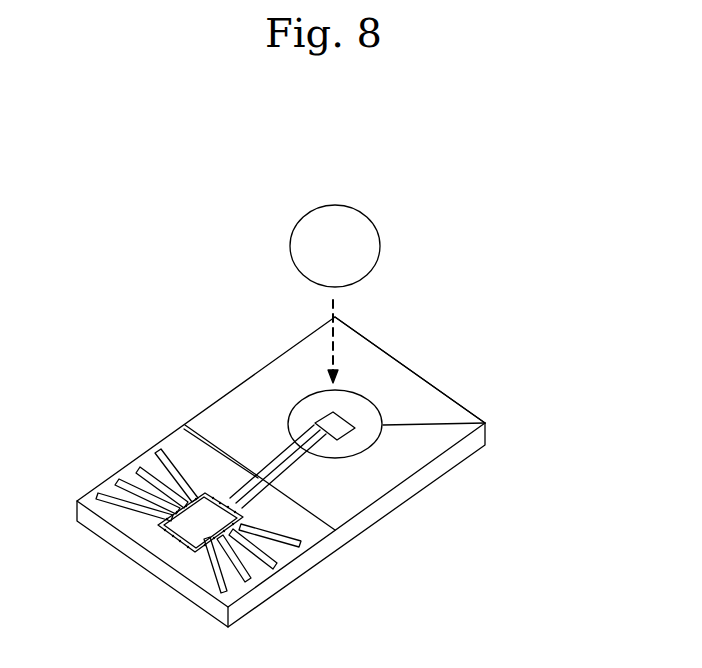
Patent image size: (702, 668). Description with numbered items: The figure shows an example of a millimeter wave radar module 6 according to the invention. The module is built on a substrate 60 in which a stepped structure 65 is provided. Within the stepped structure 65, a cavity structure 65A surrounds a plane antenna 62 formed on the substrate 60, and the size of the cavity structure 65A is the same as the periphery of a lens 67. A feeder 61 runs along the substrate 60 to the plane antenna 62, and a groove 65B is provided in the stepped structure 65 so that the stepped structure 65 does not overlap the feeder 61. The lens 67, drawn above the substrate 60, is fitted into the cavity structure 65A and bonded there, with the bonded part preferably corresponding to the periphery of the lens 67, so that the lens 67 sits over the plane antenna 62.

The millimeter wave radar module 6 is at (56, 172).
The substrate 60 is at (187, 448).
The feeder 61 is at (280, 503).
The plane antenna 62 is at (327, 418).
The stepped structure 65 is at (395, 388).
The cavity structure 65A is at (415, 420).
The groove 65B is at (290, 470).
The lens 67 is at (340, 238).